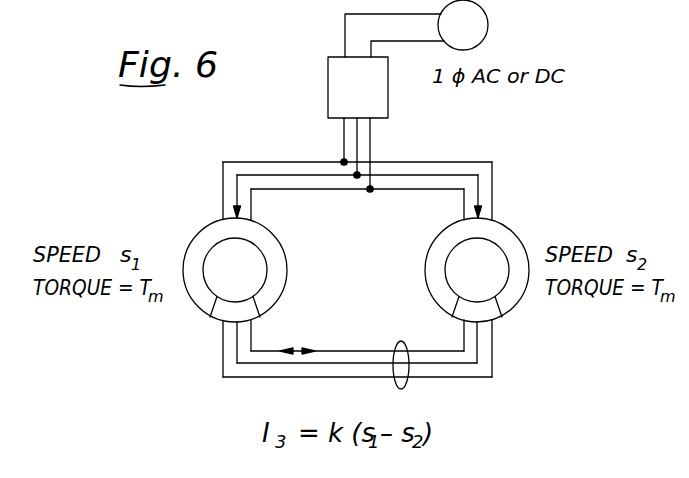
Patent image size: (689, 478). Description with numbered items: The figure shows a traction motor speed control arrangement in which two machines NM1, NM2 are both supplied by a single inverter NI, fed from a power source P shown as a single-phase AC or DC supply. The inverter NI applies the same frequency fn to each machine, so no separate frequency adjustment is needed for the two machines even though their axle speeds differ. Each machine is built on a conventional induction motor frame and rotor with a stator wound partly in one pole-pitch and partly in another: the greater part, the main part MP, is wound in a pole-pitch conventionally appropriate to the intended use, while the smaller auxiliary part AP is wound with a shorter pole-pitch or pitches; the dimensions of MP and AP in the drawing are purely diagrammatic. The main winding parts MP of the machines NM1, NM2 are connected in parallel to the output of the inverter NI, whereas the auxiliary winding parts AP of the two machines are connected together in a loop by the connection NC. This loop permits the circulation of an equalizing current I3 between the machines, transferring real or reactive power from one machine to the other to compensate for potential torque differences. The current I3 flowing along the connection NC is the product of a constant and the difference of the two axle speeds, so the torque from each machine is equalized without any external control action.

The power source P is at (463, 25).
The inverter NI is at (358, 87).
The frequency fn is at (353, 189).
The first machine NM1 is at (235, 270).
The second machine NM2 is at (477, 270).
The main part MP is at (268, 243).
The auxiliary part AP is at (246, 309).
The equalizing current I3 is at (317, 337).
The loop connection NC is at (398, 342).